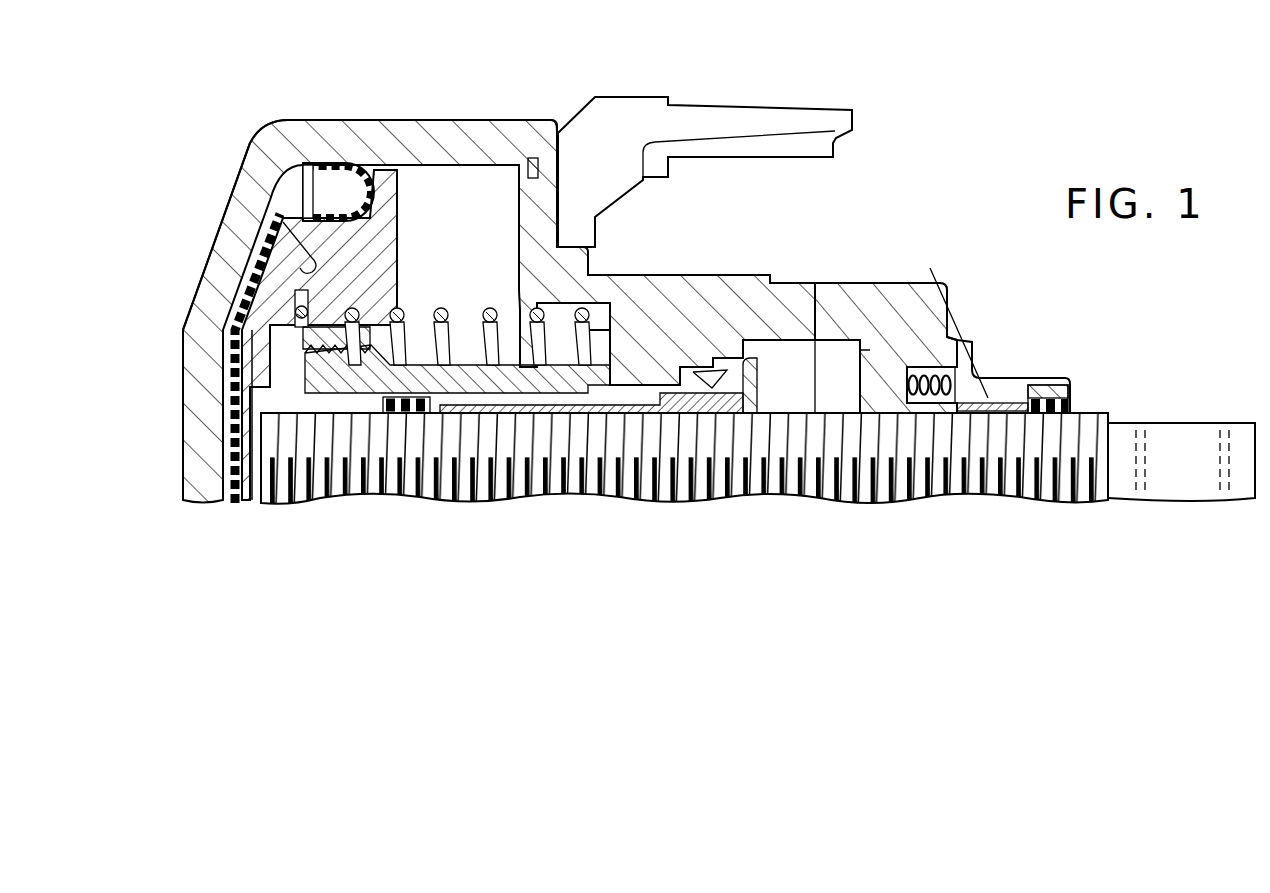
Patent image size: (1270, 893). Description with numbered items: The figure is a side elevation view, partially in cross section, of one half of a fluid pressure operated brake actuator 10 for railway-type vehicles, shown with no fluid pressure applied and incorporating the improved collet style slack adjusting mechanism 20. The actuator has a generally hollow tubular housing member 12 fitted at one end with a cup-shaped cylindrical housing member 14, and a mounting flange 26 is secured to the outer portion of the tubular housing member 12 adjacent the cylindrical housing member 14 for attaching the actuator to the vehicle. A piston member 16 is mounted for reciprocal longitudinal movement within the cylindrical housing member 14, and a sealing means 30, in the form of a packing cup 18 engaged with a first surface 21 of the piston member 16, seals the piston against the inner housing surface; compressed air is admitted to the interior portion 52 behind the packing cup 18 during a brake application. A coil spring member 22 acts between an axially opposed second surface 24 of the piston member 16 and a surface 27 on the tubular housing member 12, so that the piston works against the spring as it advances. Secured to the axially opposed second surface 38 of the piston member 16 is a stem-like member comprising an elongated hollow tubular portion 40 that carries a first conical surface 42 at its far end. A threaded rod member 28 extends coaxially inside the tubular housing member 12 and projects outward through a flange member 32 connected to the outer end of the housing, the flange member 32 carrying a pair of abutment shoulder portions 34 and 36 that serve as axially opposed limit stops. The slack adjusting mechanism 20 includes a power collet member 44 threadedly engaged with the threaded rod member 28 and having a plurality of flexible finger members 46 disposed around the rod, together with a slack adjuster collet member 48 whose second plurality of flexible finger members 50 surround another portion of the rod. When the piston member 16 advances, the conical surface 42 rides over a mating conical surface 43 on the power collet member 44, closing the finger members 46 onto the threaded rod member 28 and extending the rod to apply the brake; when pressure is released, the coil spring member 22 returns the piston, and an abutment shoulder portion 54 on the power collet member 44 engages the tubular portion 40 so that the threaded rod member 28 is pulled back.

The fluid pressure operated brake actuator 10 is at (462, 103).
The tubular housing member 12 is at (640, 290).
The cylindrical housing member 14 is at (258, 175).
The piston member 16 is at (268, 298).
The packing cup 18 is at (240, 435).
The collet style slack adjusting mechanism 20 is at (865, 422).
The first surface of piston member 21 is at (245, 470).
The coil spring member 22 is at (298, 322).
The second surface of piston member 24 is at (312, 262).
The mounting flange 26 is at (617, 183).
The surface on tubular housing member 27 is at (585, 340).
The threaded rod member 28 is at (368, 463).
The sealing means 30 is at (288, 196).
The flange member 32 is at (947, 348).
The abutment shoulder portion 34 is at (917, 330).
The abutment shoulder portion 36 is at (877, 328).
The second surface of piston member 38 is at (303, 380).
The hollow tubular portion 40 is at (483, 382).
The first conical surface 42 is at (725, 375).
The mating conical surface 43 is at (695, 300).
The power collet member 44 is at (738, 412).
The flexible finger members 46 is at (514, 397).
The slack adjuster collet member 48 is at (895, 415).
The flexible finger members 50 is at (1000, 408).
The interior portion of cylindrical housing member 52 is at (298, 172).
The abutment shoulder portion 54 is at (703, 393).